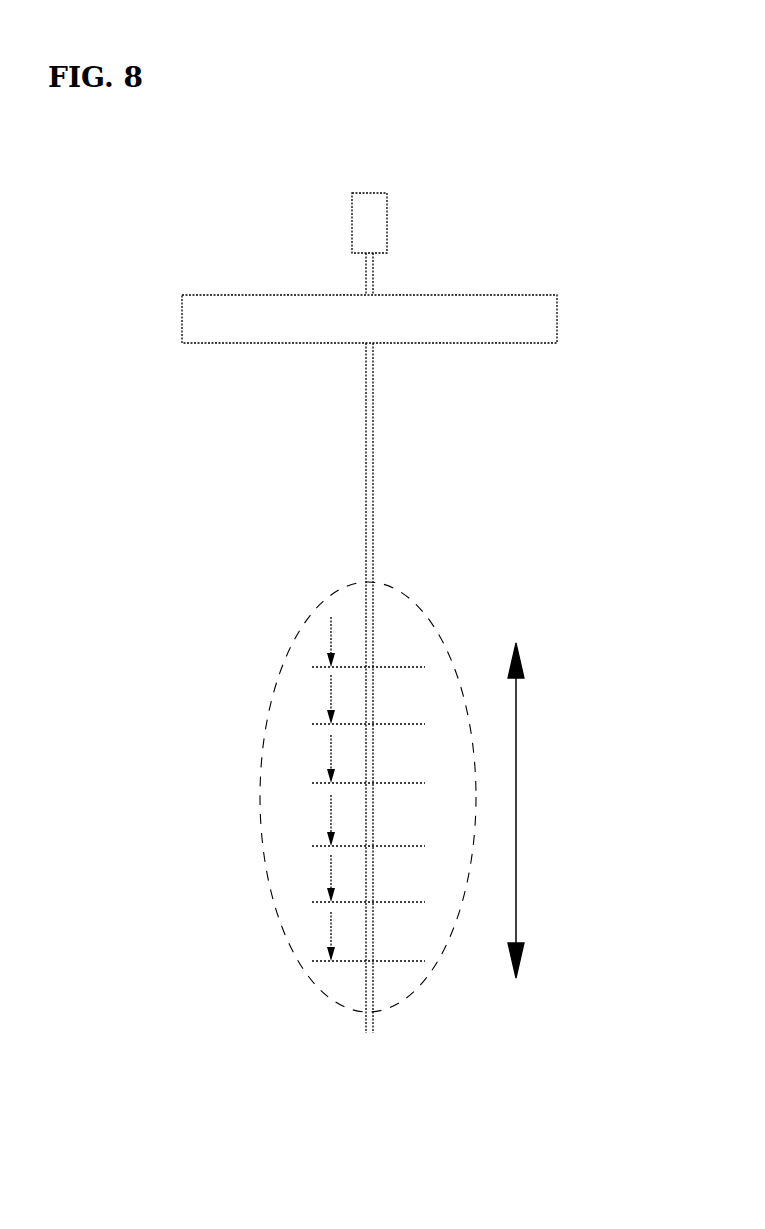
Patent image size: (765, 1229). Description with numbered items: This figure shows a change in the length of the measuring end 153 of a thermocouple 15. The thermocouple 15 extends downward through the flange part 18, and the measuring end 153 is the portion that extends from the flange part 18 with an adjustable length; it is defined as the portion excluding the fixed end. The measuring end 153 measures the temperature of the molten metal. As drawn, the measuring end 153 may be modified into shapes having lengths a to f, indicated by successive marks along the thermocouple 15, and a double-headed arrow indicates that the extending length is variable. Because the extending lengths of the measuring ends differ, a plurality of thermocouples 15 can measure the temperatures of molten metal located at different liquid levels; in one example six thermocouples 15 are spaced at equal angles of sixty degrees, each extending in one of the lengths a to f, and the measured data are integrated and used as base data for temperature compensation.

The thermocouple 15 is at (553, 511).
The flange part 18 is at (537, 324).
The measuring end 153 is at (260, 752).